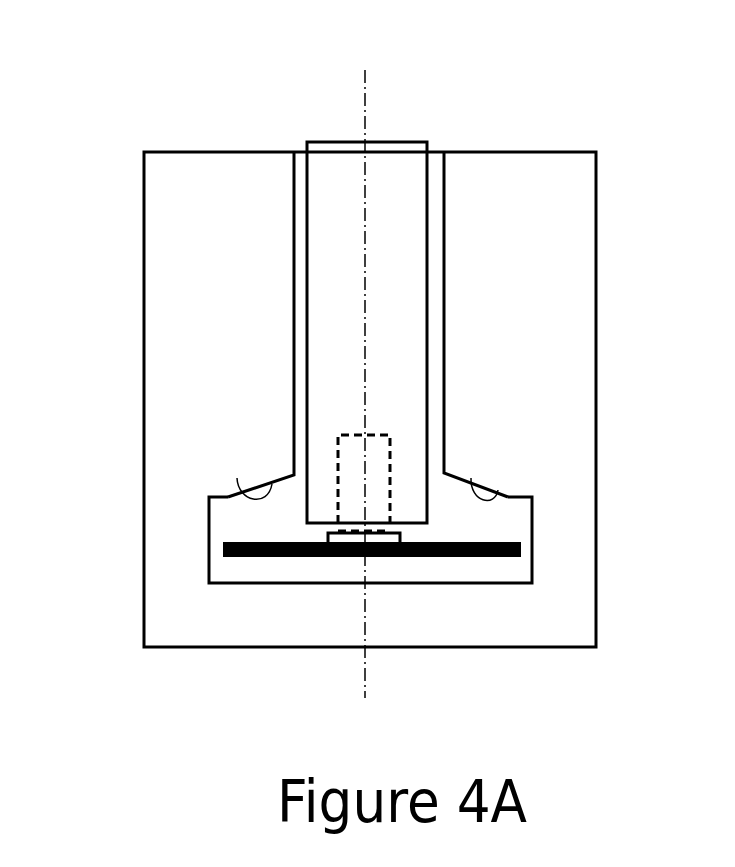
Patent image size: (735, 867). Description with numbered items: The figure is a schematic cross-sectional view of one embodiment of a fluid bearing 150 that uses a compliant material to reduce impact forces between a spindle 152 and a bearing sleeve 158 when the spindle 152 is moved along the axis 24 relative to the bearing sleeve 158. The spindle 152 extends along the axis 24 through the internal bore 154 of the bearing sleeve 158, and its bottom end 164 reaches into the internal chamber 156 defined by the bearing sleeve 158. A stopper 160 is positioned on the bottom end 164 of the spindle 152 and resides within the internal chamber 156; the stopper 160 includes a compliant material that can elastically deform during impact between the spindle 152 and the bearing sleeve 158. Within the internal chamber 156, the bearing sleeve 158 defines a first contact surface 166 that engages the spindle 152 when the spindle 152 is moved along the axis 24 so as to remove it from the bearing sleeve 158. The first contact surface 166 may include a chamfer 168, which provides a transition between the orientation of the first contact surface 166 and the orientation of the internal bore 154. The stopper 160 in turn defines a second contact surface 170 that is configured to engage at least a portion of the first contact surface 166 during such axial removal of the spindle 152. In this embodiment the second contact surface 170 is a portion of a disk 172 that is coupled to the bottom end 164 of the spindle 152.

The fluid bearing 150 is at (203, 117).
The spindle 152 is at (347, 152).
The axis 24 is at (365, 93).
The internal bore 154 is at (435, 143).
The bearing sleeve 158 is at (567, 230).
The chamfer 168 is at (237, 478).
The bottom end of the spindle 164 is at (444, 527).
The first contact surface 166 is at (215, 497).
The internal chamber 156 is at (508, 520).
The second contact surface 170 is at (250, 543).
The stopper 160 is at (247, 563).
The disk 172 is at (500, 557).